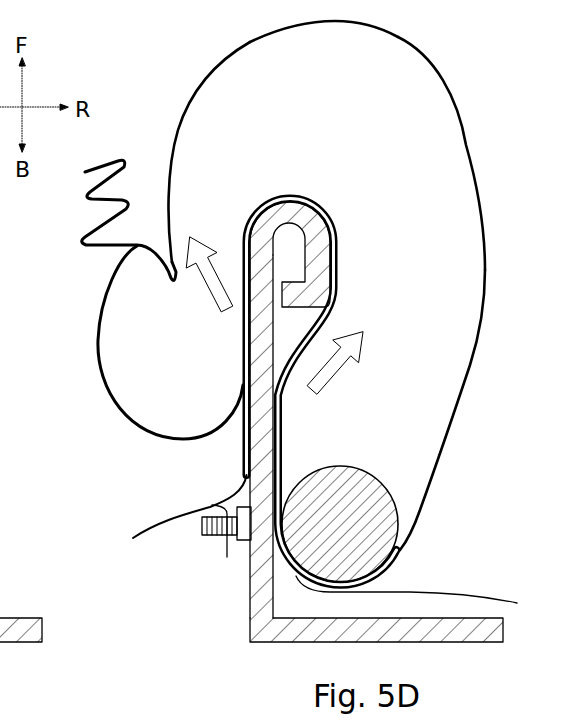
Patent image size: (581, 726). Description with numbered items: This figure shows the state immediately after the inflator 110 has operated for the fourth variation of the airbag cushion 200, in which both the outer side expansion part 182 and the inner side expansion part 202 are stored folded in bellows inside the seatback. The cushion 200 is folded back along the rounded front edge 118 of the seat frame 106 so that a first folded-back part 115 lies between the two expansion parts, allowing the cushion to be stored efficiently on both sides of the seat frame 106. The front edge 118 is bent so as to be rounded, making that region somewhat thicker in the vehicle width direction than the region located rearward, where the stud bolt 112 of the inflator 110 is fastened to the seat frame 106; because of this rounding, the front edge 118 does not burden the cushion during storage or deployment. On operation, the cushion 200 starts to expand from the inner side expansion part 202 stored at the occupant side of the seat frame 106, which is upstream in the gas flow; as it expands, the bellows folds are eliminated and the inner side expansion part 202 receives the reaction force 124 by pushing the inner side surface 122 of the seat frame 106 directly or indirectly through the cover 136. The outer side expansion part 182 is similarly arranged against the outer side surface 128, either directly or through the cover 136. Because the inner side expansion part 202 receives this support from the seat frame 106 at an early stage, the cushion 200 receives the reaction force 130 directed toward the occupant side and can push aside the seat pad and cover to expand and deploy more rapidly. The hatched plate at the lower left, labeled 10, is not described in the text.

The vehicle body panel 10 is at (21, 575).
The seat frame 106 is at (277, 645).
The inflator 110 is at (400, 523).
The stud bolt 112 is at (220, 537).
The first folded-back part 115 is at (322, 21).
The front edge 118 is at (306, 196).
The side surface of the inner side of the seat frame 122 is at (281, 425).
The reaction force 124 is at (362, 332).
The side surface of the outer side of the seat frame 128 is at (243, 376).
The reaction force 130 is at (207, 285).
The cover 136 is at (148, 534).
The outer side expansion part 182 is at (108, 164).
The cushion 200 is at (418, 58).
The inner side expansion part 202 is at (481, 189).